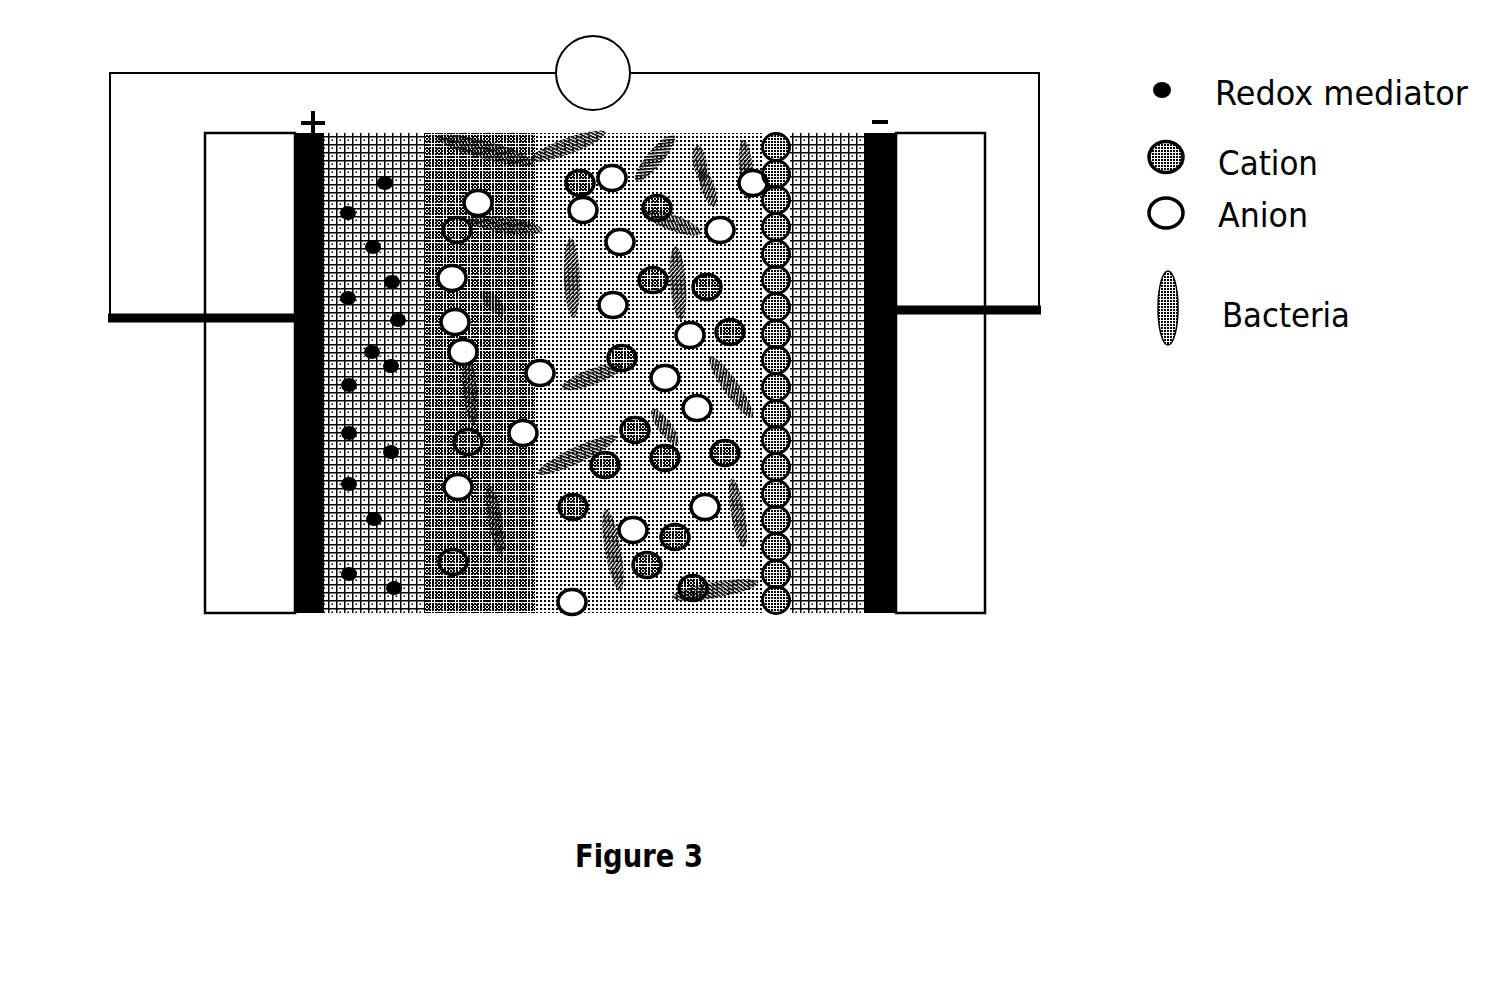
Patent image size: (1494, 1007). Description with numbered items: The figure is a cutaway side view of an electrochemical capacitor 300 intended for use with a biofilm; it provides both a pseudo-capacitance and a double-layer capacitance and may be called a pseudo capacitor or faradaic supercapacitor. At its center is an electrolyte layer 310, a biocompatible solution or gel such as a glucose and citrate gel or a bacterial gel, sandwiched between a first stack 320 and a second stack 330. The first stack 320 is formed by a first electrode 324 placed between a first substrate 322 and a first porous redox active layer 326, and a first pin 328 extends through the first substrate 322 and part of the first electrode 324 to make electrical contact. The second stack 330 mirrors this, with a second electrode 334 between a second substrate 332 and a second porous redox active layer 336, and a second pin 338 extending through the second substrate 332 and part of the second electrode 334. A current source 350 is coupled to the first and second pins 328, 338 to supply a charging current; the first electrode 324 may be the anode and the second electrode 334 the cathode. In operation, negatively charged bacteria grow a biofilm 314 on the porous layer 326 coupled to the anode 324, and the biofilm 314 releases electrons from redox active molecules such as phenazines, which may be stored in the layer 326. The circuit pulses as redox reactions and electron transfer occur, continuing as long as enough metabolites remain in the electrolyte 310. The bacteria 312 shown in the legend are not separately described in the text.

The electrochemical capacitor 300 is at (694, 407).
The electrolyte layer 310 is at (607, 438).
The bacteria 312 is at (677, 163).
The biofilm 314 is at (514, 595).
The first stack 320 is at (287, 455).
The first substrate 322 is at (237, 592).
The first electrode 324 is at (308, 620).
The first porous redox active layer 326 is at (357, 618).
The first pin 328 is at (147, 323).
The second stack 330 is at (925, 459).
The second substrate 332 is at (968, 593).
The second electrode 334 is at (883, 617).
The second porous redox active layer 336 is at (827, 617).
The second pin 338 is at (1018, 313).
The current source 350 is at (567, 42).